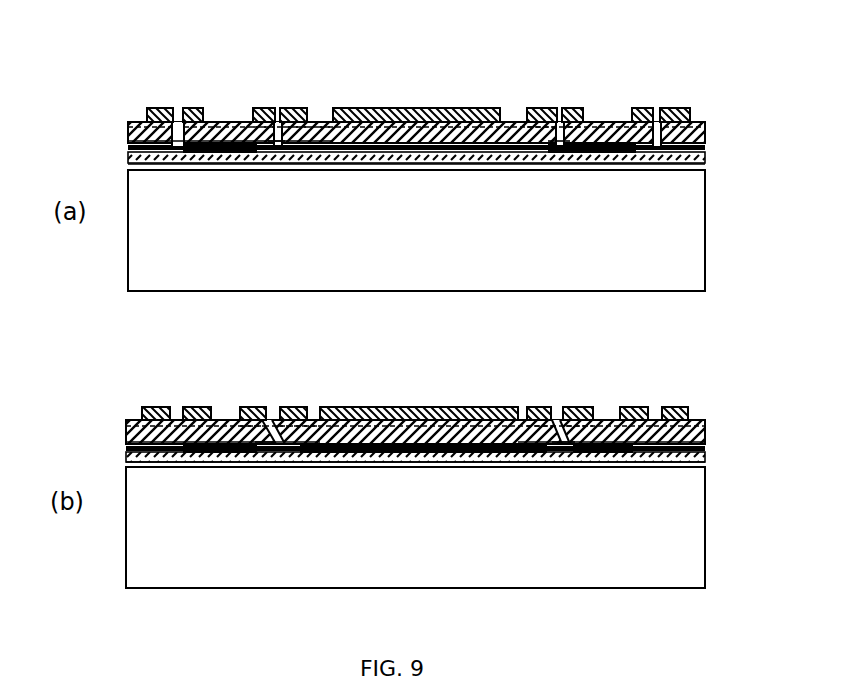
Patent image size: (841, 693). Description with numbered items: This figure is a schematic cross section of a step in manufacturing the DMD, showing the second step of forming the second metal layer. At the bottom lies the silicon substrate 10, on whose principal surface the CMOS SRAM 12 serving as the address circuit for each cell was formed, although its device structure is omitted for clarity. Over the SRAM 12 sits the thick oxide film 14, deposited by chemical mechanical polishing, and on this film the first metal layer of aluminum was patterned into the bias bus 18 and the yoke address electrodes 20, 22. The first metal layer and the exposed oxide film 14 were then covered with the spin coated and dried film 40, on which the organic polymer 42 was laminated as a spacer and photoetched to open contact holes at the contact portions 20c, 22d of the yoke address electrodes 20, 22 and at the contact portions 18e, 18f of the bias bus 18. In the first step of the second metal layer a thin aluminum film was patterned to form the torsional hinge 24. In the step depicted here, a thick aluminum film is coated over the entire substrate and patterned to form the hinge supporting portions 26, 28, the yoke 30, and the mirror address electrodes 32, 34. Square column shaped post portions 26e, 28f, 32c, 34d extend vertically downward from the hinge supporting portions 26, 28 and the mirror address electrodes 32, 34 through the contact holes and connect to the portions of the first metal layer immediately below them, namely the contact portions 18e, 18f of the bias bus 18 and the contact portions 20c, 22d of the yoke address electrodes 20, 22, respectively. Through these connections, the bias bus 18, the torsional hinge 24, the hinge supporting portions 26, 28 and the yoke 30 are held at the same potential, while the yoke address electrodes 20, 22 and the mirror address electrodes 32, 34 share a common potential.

The silicon substrate 10 is at (412, 274).
The CMOS SRAM 12 is at (430, 216).
The thick oxide film 14 is at (683, 170).
The bias bus 18 is at (340, 165).
The contact portion of bias bus 18e is at (275, 165).
The contact portion of bias bus 18f is at (556, 165).
The yoke address electrode 20 is at (298, 466).
The contact portion of yoke address electrode 20c is at (262, 466).
The yoke address electrode 22 is at (525, 466).
The contact portion of yoke address electrode 22d is at (573, 466).
The torsional hinge 24 is at (331, 121).
The hinge supporting portion 26 is at (287, 110).
The post portion 26e is at (276, 125).
The hinge supporting portion 28 is at (548, 110).
The post portion 28f is at (547, 163).
The yoke 30 is at (421, 108).
The mirror address electrode 32 is at (290, 407).
The post portion 32c is at (268, 420).
The mirror address electrode 34 is at (583, 408).
The post portion 34d is at (560, 418).
The film 40 is at (237, 165).
The organic polymer 42 is at (224, 127).